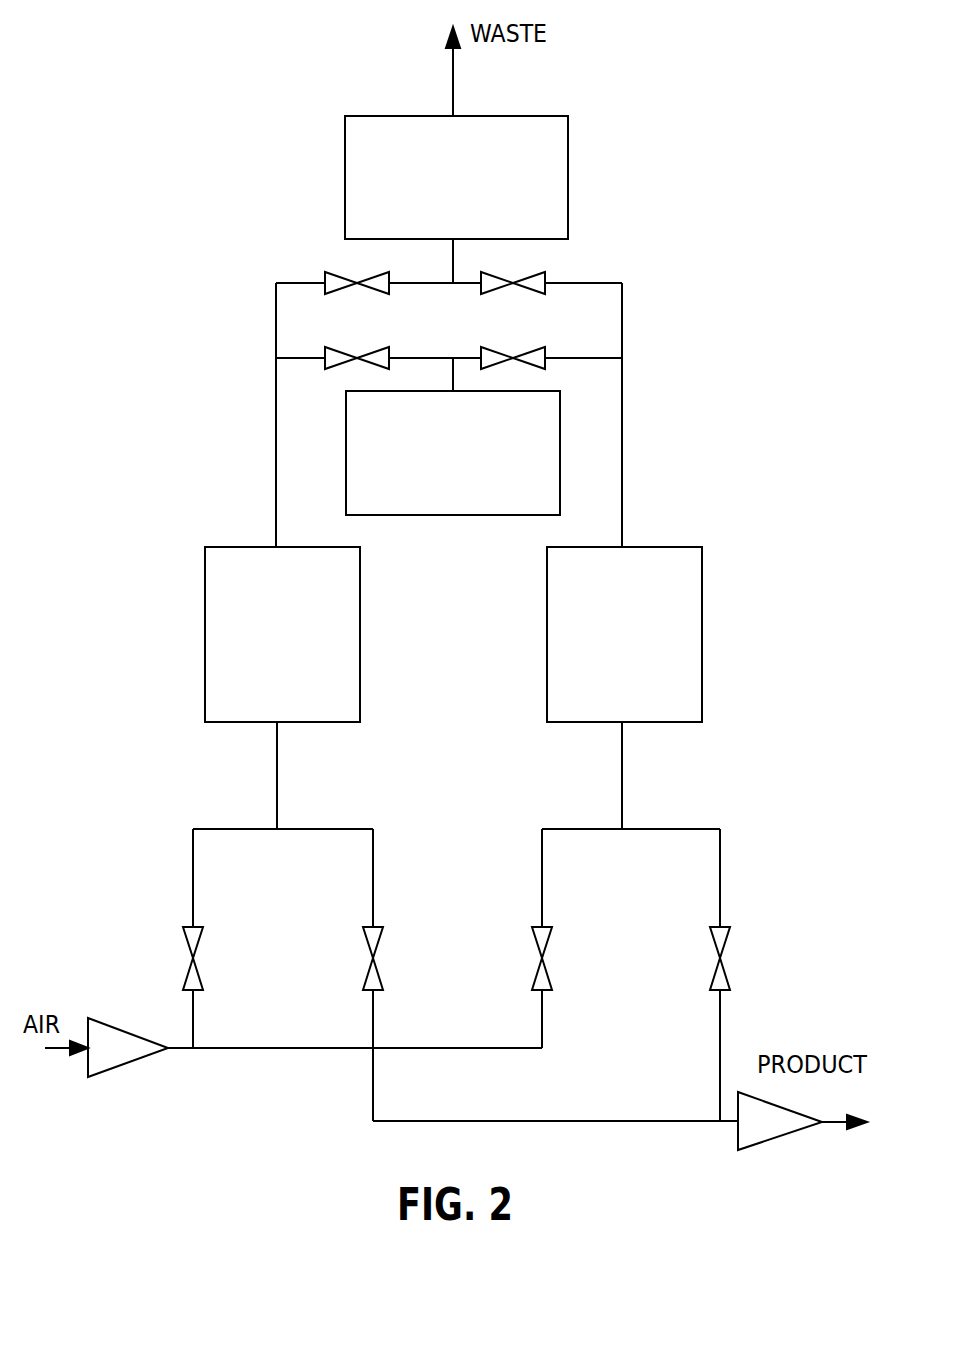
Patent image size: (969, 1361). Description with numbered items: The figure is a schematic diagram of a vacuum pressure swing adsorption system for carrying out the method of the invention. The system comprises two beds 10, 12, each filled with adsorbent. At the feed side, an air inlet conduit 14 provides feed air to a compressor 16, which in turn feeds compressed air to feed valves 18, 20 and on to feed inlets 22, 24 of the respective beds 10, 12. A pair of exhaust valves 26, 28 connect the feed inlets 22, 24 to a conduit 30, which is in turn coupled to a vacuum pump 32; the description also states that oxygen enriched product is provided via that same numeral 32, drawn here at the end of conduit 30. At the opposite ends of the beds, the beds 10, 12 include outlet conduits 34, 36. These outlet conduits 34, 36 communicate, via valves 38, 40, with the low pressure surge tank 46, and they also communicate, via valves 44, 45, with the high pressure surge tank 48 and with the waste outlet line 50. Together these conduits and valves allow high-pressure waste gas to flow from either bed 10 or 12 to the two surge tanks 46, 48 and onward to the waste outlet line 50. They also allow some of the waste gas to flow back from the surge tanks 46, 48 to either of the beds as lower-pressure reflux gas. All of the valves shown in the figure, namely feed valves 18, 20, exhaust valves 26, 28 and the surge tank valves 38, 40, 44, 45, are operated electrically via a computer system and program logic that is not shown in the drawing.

The bed 10 is at (302, 662).
The bed 12 is at (650, 662).
The air inlet conduit 14 is at (68, 1050).
The compressor 16 is at (180, 1050).
The feed valve 18 is at (195, 958).
The feed valve 20 is at (545, 958).
The feed inlet 22 is at (277, 787).
The feed inlet 24 is at (622, 787).
The exhaust valve 26 is at (375, 958).
The exhaust valve 28 is at (723, 958).
The conduit 30 is at (600, 1122).
The vacuum pump 32 is at (830, 1125).
The outlet conduit 34 is at (276, 478).
The outlet conduit 36 is at (622, 470).
The valve 38 is at (357, 358).
The valve 40 is at (517, 358).
The valve 44 is at (357, 283).
The valve 45 is at (517, 282).
The low pressure surge tank 46 is at (562, 477).
The high pressure surge tank 48 is at (568, 168).
The waste outlet line 50 is at (430, 67).